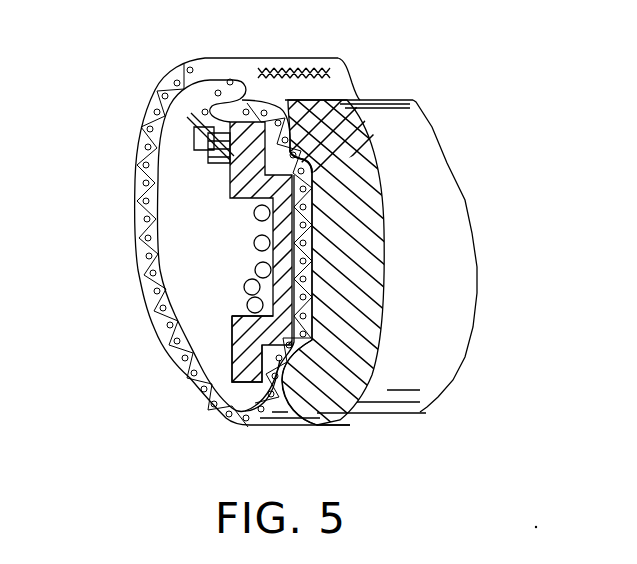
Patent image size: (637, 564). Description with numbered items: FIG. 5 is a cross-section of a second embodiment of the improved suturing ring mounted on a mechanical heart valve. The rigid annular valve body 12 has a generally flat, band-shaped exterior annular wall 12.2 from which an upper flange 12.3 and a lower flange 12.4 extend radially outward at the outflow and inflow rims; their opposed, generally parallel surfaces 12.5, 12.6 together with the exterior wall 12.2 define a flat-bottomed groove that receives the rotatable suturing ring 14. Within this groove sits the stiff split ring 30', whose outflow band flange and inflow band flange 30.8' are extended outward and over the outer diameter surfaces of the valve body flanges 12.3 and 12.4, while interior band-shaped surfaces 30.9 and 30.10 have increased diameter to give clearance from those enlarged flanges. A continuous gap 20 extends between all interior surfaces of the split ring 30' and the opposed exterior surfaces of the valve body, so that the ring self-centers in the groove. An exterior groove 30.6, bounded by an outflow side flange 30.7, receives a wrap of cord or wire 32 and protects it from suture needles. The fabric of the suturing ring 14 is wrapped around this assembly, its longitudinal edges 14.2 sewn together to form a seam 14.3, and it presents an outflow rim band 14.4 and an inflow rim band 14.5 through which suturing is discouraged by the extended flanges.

The annular valve body 12 is at (369, 338).
The exterior annular wall 12.2 is at (322, 262).
The upper flange 12.3 is at (328, 106).
The lower flange 12.4 is at (320, 386).
The flange surface 12.5 is at (368, 103).
The flange surface 12.6 is at (325, 407).
The suturing ring 14 is at (191, 50).
The longitudinal edges 14.2 is at (226, 161).
The seam 14.3 is at (195, 112).
The outflow rim band 14.4 is at (301, 127).
The inflow rim band 14.5 is at (277, 412).
The gap 20 is at (313, 160).
The split ring 30' is at (282, 250).
The exterior groove 30.6 is at (258, 233).
The outflow side flange 30.7 is at (255, 207).
The inflow band flange 30.8' is at (186, 388).
The interior band shaped surface 30.9 is at (278, 76).
The interior band shaped surface 30.10 is at (313, 306).
The cord or wire 32 is at (234, 317).